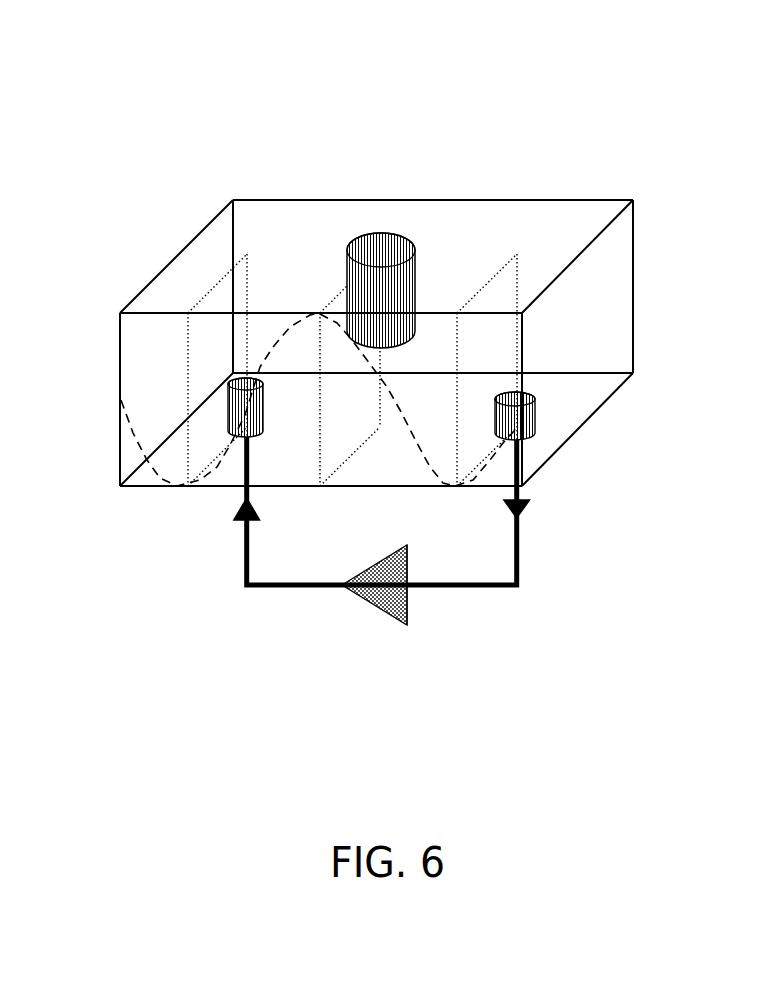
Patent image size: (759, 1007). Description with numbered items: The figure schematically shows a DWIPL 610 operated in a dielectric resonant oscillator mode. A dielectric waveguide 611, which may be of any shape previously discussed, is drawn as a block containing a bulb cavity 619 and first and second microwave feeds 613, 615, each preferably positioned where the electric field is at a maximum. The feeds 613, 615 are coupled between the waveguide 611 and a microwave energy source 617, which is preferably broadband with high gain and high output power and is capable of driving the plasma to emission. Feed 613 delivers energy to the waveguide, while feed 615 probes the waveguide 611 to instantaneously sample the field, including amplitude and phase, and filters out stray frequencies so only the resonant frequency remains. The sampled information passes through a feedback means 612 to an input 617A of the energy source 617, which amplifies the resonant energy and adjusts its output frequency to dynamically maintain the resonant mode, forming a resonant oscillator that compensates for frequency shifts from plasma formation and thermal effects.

The DWIPL 610 is at (258, 142).
The dielectric waveguide 611 is at (633, 298).
The bulb cavity 619 is at (383, 237).
The first microwave feed 613 is at (227, 433).
The second microwave feed 615 is at (533, 432).
The feedback means 612 is at (443, 517).
The microwave energy source 617 is at (375, 602).
The input 617A is at (486, 610).